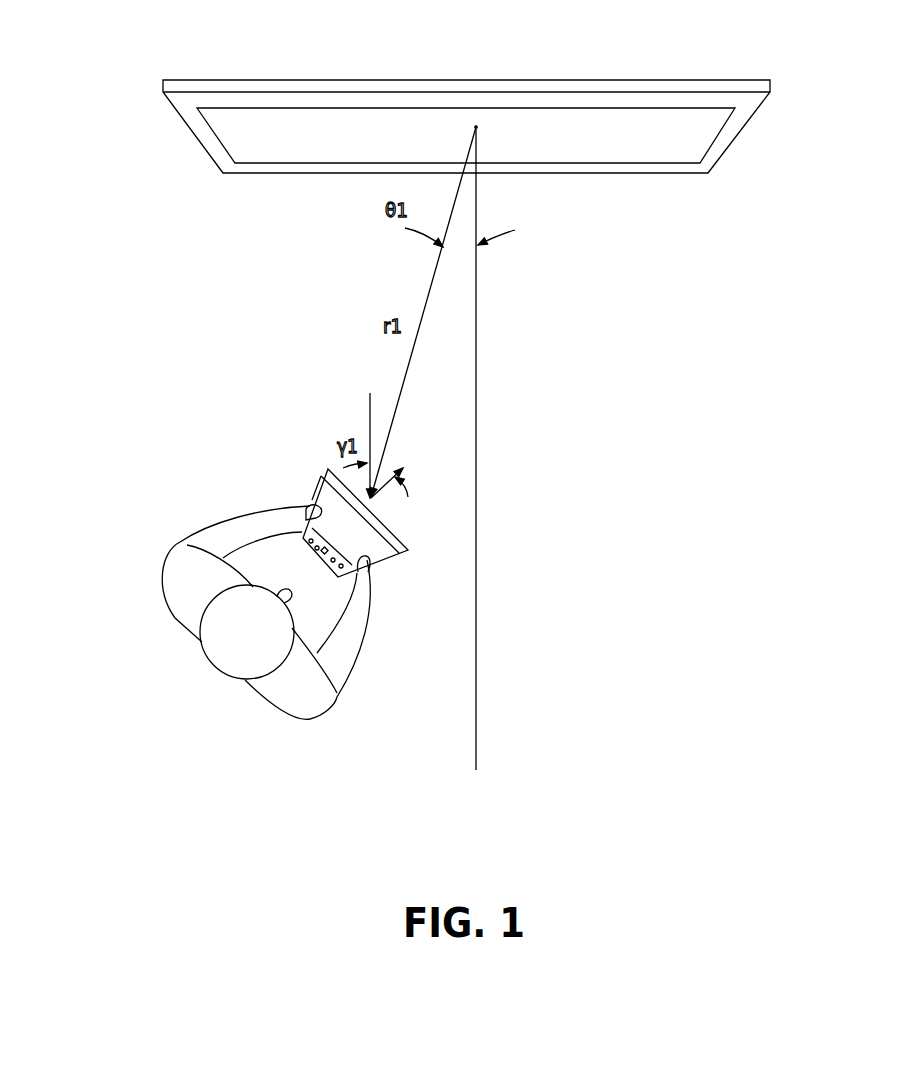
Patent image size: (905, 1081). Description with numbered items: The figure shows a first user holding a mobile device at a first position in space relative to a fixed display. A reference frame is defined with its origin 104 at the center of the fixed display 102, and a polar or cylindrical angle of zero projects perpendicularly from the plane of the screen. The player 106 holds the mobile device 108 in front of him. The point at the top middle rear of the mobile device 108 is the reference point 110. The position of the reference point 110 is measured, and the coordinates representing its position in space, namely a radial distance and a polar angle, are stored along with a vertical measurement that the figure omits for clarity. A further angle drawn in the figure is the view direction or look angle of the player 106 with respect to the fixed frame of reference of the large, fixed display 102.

The fixed display 102 is at (200, 74).
The origin 104 is at (477, 132).
The player 106 is at (160, 570).
The mobile device 108 is at (320, 477).
The reference point 110 is at (372, 502).